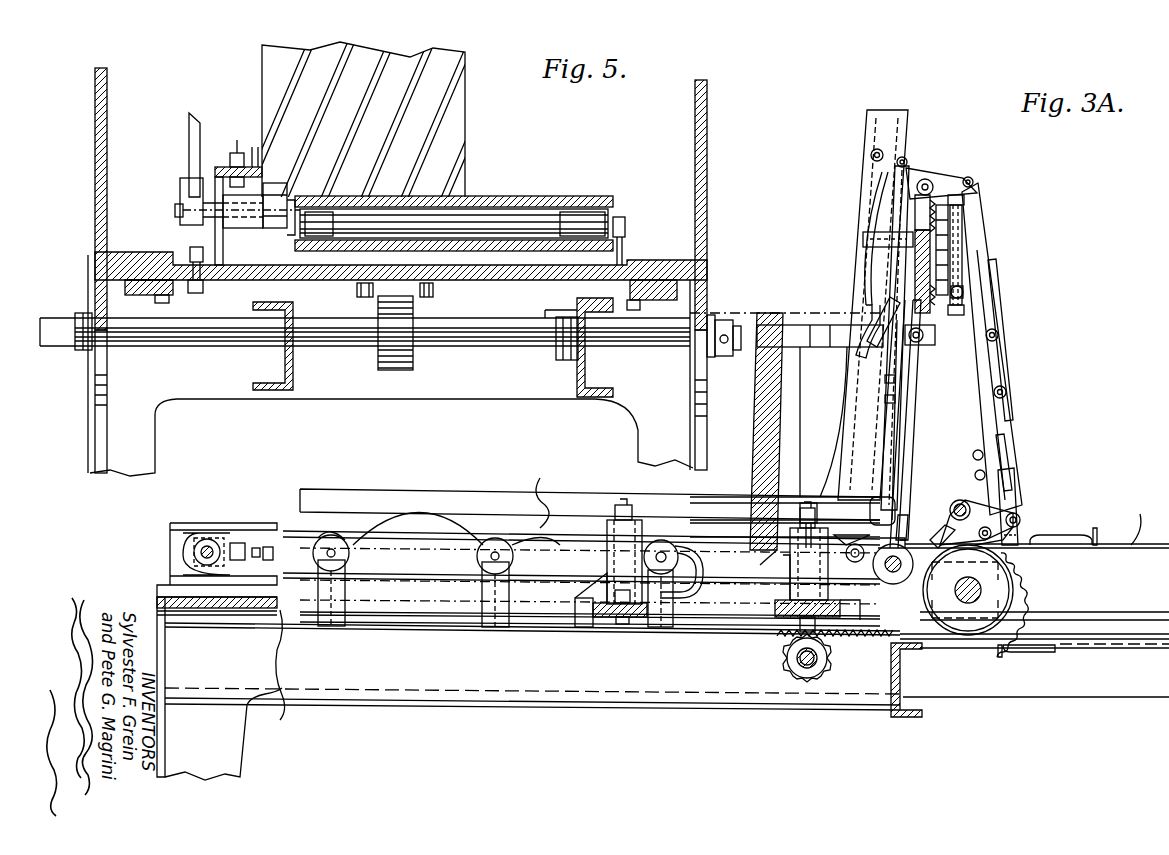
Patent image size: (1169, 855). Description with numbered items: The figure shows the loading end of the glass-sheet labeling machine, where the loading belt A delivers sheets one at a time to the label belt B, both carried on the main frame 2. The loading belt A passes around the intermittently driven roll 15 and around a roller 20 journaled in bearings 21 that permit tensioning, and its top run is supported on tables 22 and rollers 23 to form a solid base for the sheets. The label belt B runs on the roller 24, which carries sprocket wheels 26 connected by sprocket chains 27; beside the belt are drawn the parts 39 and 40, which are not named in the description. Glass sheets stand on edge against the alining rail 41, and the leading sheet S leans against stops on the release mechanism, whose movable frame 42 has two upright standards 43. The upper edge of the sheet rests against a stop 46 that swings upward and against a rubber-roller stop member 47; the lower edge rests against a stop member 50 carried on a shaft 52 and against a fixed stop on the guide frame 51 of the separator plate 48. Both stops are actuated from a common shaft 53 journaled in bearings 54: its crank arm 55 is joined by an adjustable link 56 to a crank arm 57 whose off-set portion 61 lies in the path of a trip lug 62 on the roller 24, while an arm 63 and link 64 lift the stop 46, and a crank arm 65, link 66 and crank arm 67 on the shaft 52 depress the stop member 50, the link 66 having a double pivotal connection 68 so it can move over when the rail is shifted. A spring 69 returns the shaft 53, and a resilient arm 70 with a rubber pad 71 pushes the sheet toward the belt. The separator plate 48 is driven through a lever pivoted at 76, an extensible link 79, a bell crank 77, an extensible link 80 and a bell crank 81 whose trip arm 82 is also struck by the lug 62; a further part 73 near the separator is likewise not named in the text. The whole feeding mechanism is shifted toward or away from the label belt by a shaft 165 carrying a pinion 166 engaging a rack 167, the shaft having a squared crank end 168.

In FIG. 3A, the main frame 2 is at (1042, 698).
In FIG. 3A, the roll 15 is at (898, 553).
In FIG. 3A, the roller 20 is at (208, 544).
In FIG. 3A, the bearings 21 is at (183, 547).
In FIG. 5, the tables 22 is at (410, 222).
In FIG. 3A, the tables 22 is at (283, 545).
In FIG. 5, the rollers 23 is at (500, 222).
In FIG. 3A, the rollers 23 is at (362, 545).
In FIG. 3A, the roller 24 is at (1014, 567).
In FIG. 3A, the sprocket wheels 26 is at (1016, 594).
In FIG. 3A, the sprocket chains 27 is at (1136, 645).
In FIG. 3A, the stop post 39 is at (1095, 532).
In FIG. 3A, the guide plate 40 is at (1062, 536).
In FIG. 5, the alining rail 41 is at (268, 160).
In FIG. 3A, the alining rail 41 is at (590, 500).
In FIG. 5, the movable frame 42 is at (178, 292).
In FIG. 3A, the movable frame 42 is at (790, 607).
In FIG. 5, the upright standards 43 is at (95, 165).
In FIG. 3A, the upright standards 43 is at (850, 403).
In FIG. 3A, the stop 46 is at (923, 336).
In FIG. 3A, the stop member 47 is at (918, 346).
In FIG. 3A, the separator plate 48 is at (901, 432).
In FIG. 3A, the stop member 50 is at (902, 532).
In FIG. 3A, the guide frame 51 is at (898, 455).
In FIG. 5, the shaft 52 is at (177, 210).
In FIG. 3A, the shaft 52 is at (860, 546).
In FIG. 3A, the shaft 53 is at (930, 178).
In FIG. 3A, the bearings 54 is at (918, 212).
In FIG. 3A, the crank arm 55 is at (969, 177).
In FIG. 3A, the link 56 is at (1005, 358).
In FIG. 3A, the crank arm 57 is at (1020, 516).
In FIG. 3A, the off-set portion 61 is at (1018, 532).
In FIG. 3A, the trip lug 62 is at (936, 540).
In FIG. 3A, the arm 63 is at (879, 148).
In FIG. 3A, the link 64 is at (866, 190).
In FIG. 3A, the crank arm 65 is at (906, 157).
In FIG. 5, the link 66 is at (190, 155).
In FIG. 3A, the link 66 is at (886, 372).
In FIG. 5, the crank arm 67 is at (180, 187).
In FIG. 3A, the crank arm 67 is at (863, 520).
In FIG. 3A, the pivotal connections 68 is at (881, 178).
In FIG. 3A, the spring 69 is at (948, 228).
In FIG. 3A, the arm 70 is at (866, 270).
In FIG. 3A, the rubber pad 71 is at (872, 320).
In FIG. 3A, the arm 73 is at (908, 518).
In FIG. 3A, the pivot 76 is at (963, 292).
In FIG. 3A, the bell crank 77 is at (962, 246).
In FIG. 3A, the extensible link 79 is at (964, 205).
In FIG. 3A, the link 80 is at (970, 373).
In FIG. 3A, the bell crank 81 is at (990, 520).
In FIG. 3A, the trip arm 82 is at (958, 503).
In FIG. 5, the shaft 165 is at (222, 338).
In FIG. 3A, the shaft 165 is at (830, 658).
In FIG. 5, the pinion 166 is at (413, 352).
In FIG. 3A, the pinion 166 is at (786, 658).
In FIG. 5, the rack 167 is at (378, 292).
In FIG. 3A, the rack 167 is at (915, 640).
In FIG. 5, the squared end 168 is at (62, 320).
In FIG. 5, the loading belt A is at (520, 196).
In FIG. 3A, the loading belt A is at (534, 495).
In FIG. 3A, the label belt B is at (1136, 520).
In FIG. 5, the leading sheet S is at (465, 108).
In FIG. 3A, the leading sheet S is at (906, 425).